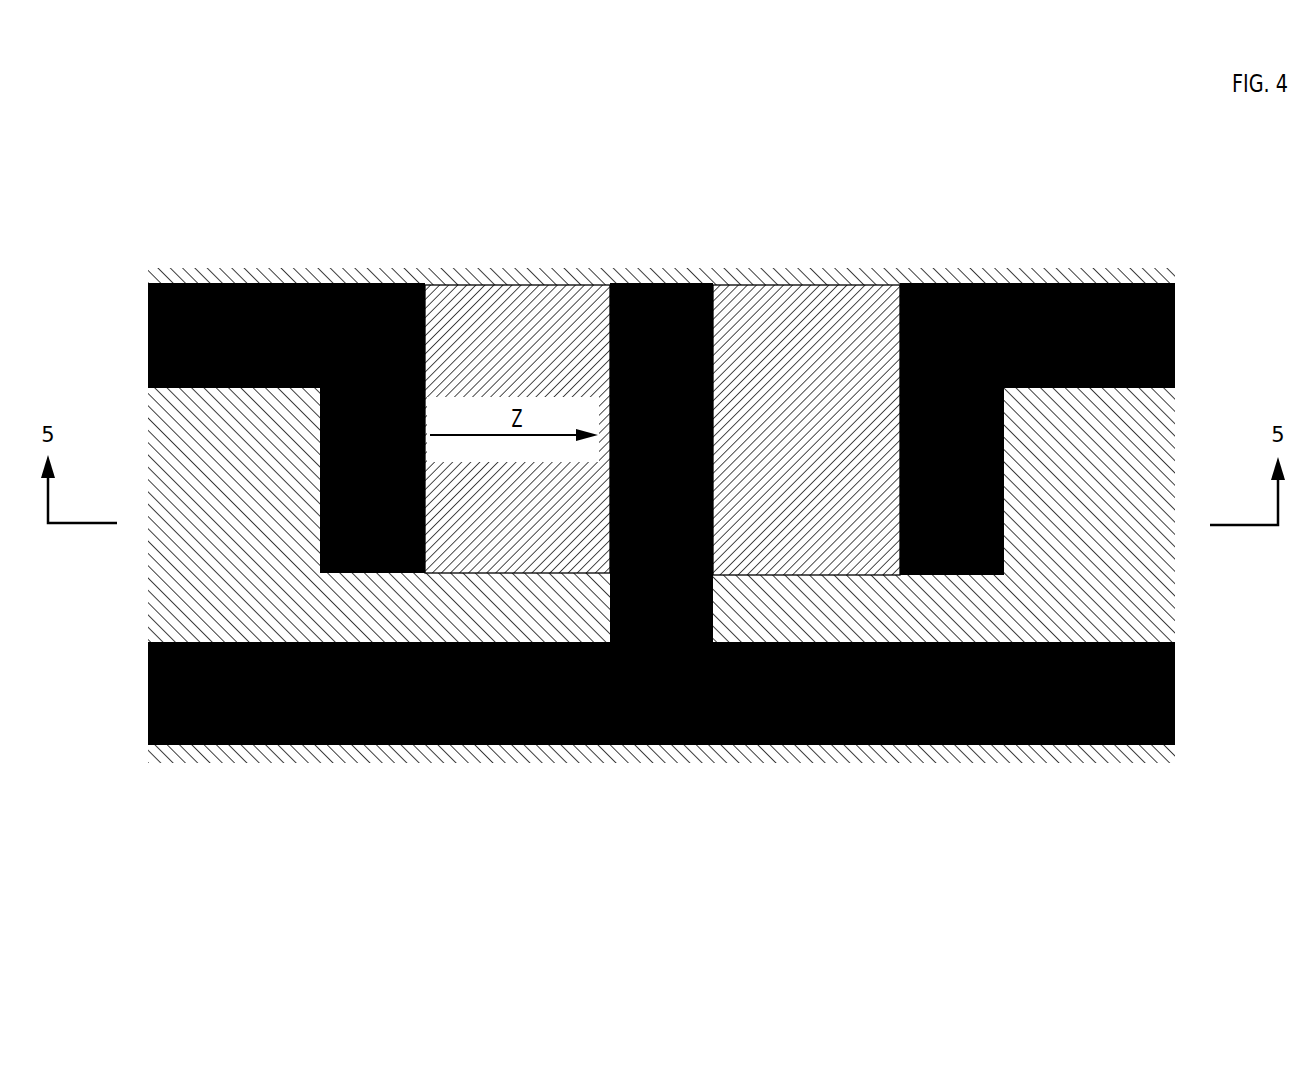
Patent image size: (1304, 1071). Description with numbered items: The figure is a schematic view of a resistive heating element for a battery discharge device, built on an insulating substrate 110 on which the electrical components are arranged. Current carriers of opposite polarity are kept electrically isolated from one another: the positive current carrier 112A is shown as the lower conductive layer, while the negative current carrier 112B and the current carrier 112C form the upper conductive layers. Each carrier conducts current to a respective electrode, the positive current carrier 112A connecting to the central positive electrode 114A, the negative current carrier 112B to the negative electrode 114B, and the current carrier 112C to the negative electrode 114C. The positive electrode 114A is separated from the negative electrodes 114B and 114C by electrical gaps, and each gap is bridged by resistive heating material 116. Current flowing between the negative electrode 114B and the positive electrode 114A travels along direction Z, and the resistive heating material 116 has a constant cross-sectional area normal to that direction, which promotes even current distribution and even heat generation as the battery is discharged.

The insulating substrate 110 is at (235, 757).
The positive current carrier 112A is at (530, 745).
The negative current carrier 112B is at (266, 283).
The current carrier 112C is at (1085, 283).
The positive electrode 114A is at (665, 283).
The negative electrode 114B is at (378, 283).
The negative electrode 114C is at (937, 283).
The resistive heating material 116 is at (530, 310).